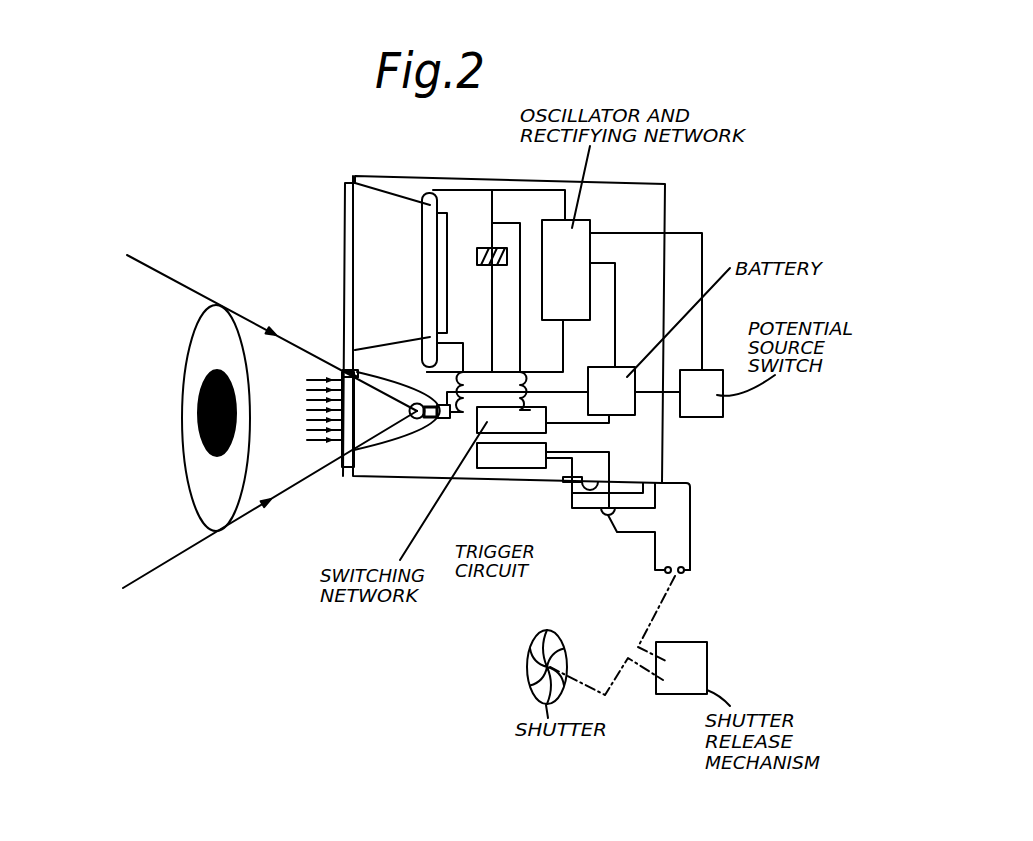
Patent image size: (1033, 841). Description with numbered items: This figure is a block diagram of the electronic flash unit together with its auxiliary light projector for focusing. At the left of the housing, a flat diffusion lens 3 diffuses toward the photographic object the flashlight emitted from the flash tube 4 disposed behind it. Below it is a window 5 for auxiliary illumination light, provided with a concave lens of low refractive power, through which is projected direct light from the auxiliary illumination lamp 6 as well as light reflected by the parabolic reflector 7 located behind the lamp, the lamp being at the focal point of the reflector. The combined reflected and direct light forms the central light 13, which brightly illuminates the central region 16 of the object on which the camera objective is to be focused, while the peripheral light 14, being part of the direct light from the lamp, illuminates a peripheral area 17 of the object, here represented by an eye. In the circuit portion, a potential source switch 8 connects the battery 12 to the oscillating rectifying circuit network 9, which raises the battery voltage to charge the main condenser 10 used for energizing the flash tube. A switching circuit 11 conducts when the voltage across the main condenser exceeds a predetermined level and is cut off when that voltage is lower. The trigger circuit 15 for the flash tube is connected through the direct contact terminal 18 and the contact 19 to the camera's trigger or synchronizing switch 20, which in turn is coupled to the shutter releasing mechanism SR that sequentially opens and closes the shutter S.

The diffusion lens 3 is at (345, 229).
The flash tube 4 is at (424, 256).
The window for auxiliary illumination light 5 is at (346, 468).
The auxiliary illumination lamp 6 is at (412, 452).
The parabolic reflector 7 is at (345, 371).
The potential source switch 8 is at (702, 418).
The oscillating rectifying circuit network 9 is at (592, 220).
The main condenser 10 is at (490, 266).
The switching circuit 11 is at (558, 406).
The battery 12 is at (629, 416).
The central light 13 is at (330, 447).
The peripheral light 14 is at (272, 502).
The trigger circuit 15 is at (515, 469).
The central light region 16 is at (237, 408).
The peripheral area 17 is at (218, 532).
The direct contact terminal 18 is at (605, 516).
The contact 19 is at (563, 484).
The trigger or synchronizing switch 20 is at (681, 576).
The shutter S is at (527, 667).
The shutter releasing mechanism SR is at (700, 643).